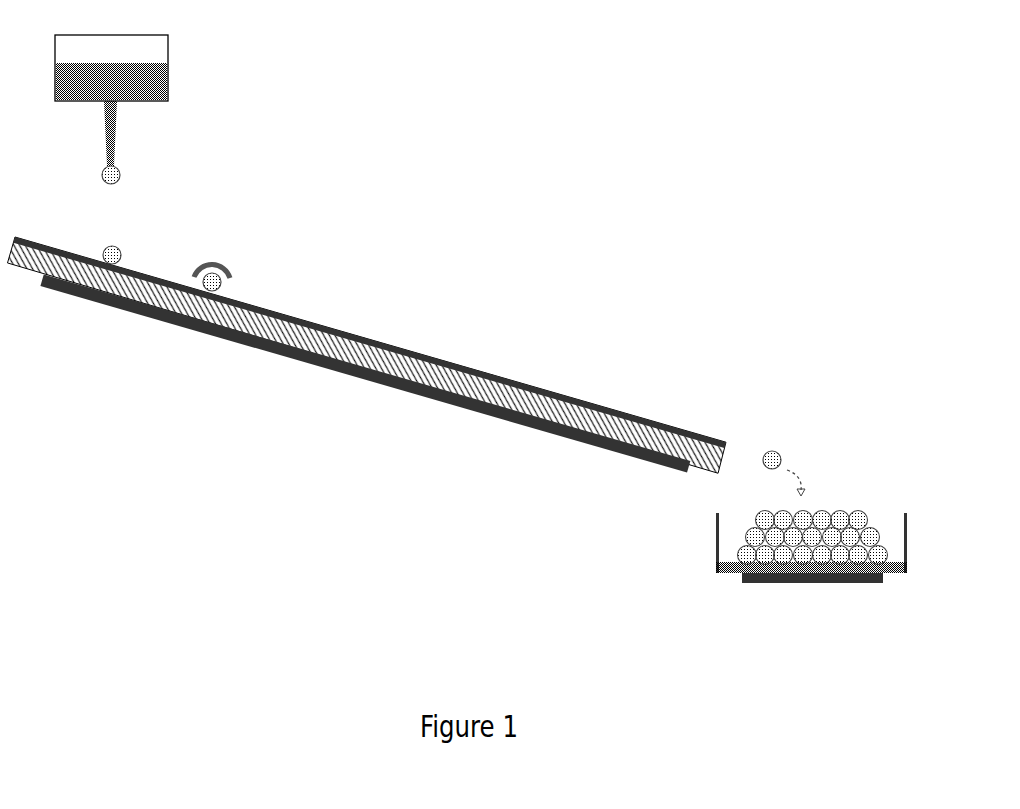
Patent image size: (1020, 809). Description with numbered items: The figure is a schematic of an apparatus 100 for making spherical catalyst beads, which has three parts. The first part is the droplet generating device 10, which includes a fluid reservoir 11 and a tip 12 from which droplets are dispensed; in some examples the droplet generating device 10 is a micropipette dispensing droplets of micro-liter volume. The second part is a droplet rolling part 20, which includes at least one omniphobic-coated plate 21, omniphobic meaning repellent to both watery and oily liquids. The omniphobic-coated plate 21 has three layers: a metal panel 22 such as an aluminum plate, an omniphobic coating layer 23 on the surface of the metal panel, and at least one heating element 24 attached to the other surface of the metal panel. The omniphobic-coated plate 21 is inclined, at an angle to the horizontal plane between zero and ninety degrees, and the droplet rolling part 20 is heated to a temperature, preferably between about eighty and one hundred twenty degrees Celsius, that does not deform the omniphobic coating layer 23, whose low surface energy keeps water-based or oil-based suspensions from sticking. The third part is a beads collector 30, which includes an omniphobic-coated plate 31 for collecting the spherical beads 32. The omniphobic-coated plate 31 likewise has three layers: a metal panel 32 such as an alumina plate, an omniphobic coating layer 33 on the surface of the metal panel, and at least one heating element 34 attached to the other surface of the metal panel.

The apparatus 100 is at (464, 341).
The droplet generating device 10 is at (129, 133).
The fluid reservoir 11 is at (170, 68).
The tip 12 is at (94, 167).
The droplet rolling part 20 is at (366, 315).
The omniphobic-coated plate 21 is at (230, 292).
The metal panel 22 is at (337, 330).
The omniphobic coating layer 23 is at (443, 382).
The heating element 24 is at (245, 347).
The beads collector 30 is at (717, 580).
The omniphobic-coated plate 31 is at (700, 548).
The metal panel 32 is at (909, 560).
The omniphobic coating layer 33 is at (812, 610).
The heating element 34 is at (811, 590).